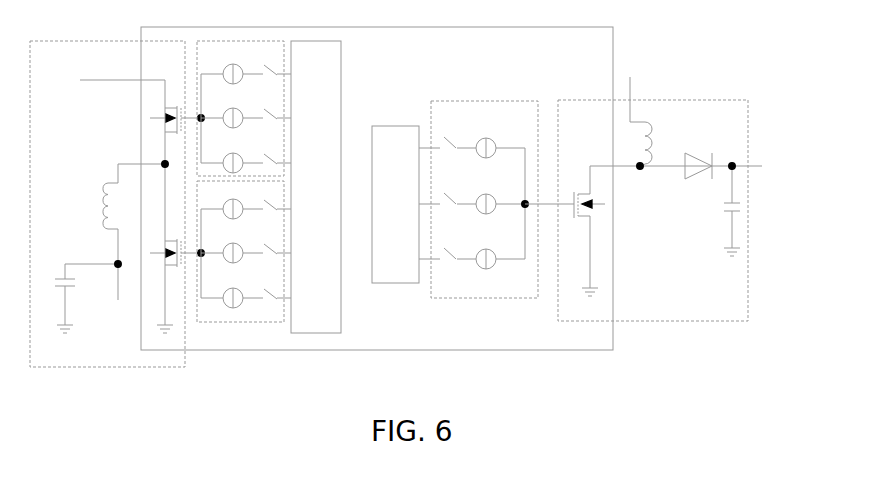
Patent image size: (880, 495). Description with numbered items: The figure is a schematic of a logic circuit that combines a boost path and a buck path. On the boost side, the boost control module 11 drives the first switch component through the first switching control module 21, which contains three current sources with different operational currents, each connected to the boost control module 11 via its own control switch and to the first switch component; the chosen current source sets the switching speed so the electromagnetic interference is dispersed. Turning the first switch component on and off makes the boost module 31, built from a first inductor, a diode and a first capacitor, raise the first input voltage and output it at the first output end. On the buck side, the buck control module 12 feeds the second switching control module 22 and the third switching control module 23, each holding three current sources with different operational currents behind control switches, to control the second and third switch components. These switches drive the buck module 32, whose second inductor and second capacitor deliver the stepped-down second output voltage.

The boost control module 11 is at (389, 126).
The buck control module 12 is at (317, 41).
The first switching control module 21 is at (481, 101).
The second switching control module 22 is at (232, 41).
The third switching control module 23 is at (235, 322).
The boost module 31 is at (684, 100).
The buck module 32 is at (105, 41).